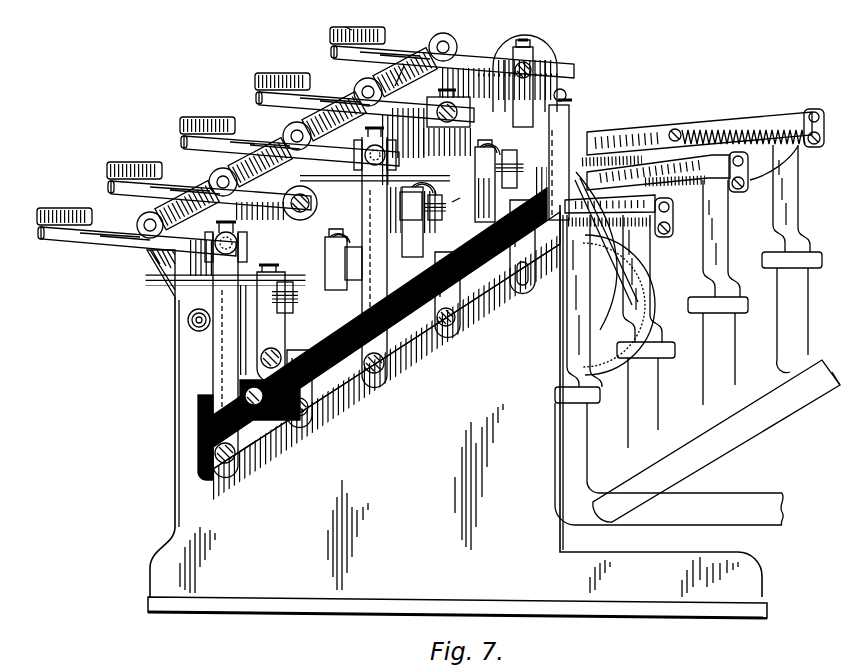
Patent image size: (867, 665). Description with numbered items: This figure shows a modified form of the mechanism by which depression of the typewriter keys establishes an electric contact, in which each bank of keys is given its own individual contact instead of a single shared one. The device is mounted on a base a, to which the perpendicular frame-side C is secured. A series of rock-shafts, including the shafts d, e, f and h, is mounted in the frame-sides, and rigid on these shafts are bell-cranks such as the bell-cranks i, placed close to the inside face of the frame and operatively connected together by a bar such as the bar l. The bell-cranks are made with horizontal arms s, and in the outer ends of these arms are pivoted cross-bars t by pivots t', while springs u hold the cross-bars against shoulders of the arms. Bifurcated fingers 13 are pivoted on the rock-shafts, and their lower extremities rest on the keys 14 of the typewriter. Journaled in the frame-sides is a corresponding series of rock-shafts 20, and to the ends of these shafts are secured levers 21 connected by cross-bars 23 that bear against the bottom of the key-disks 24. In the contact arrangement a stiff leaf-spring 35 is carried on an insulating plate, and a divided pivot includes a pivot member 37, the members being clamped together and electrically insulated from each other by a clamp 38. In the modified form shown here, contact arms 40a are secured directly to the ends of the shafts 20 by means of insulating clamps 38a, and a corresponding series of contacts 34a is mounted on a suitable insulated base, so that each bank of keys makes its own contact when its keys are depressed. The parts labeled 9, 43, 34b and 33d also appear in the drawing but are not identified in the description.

The base a is at (612, 618).
The frame-side C is at (456, 401).
The bell-cranks i is at (160, 262).
The rock-shaft d is at (188, 326).
The levers 21 is at (302, 141).
The cross-bars 23 is at (335, 53).
The key-disks 24 is at (352, 30).
The bar l is at (398, 62).
The rock-shafts 20 is at (316, 200).
The pivot member 37 is at (530, 65).
The clamp 38 is at (472, 110).
The insulating clamps 38a is at (560, 70).
The contact arms 40a is at (563, 86).
The contacts 34a is at (572, 110).
The link arm 34b is at (460, 191).
The rock-shaft h is at (500, 150).
The cam 9 is at (430, 186).
The leaf-spring 35 is at (364, 208).
The rock-shaft f is at (326, 240).
The rock-shaft e is at (287, 288).
The block 43 is at (345, 270).
The guide bar 33d is at (196, 420).
The bifurcated fingers 13 is at (790, 180).
The cross-bars t is at (753, 170).
The pivots t' is at (818, 98).
The horizontal arms s is at (672, 126).
The springs u is at (798, 146).
The keys 14 is at (626, 412).